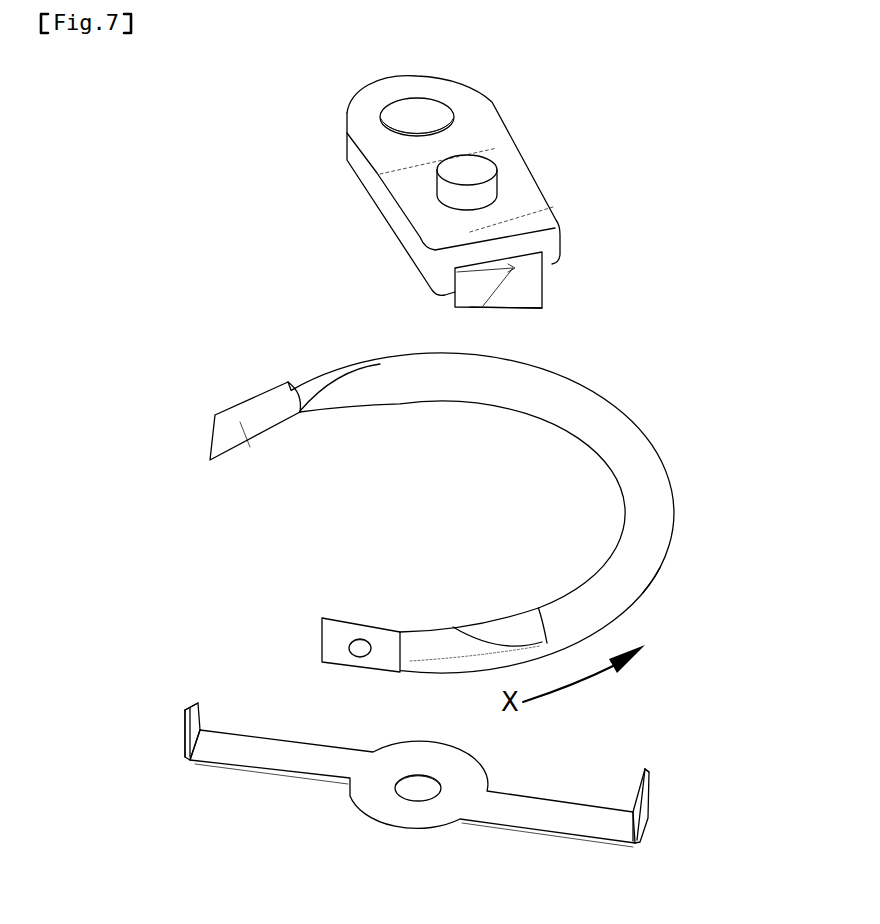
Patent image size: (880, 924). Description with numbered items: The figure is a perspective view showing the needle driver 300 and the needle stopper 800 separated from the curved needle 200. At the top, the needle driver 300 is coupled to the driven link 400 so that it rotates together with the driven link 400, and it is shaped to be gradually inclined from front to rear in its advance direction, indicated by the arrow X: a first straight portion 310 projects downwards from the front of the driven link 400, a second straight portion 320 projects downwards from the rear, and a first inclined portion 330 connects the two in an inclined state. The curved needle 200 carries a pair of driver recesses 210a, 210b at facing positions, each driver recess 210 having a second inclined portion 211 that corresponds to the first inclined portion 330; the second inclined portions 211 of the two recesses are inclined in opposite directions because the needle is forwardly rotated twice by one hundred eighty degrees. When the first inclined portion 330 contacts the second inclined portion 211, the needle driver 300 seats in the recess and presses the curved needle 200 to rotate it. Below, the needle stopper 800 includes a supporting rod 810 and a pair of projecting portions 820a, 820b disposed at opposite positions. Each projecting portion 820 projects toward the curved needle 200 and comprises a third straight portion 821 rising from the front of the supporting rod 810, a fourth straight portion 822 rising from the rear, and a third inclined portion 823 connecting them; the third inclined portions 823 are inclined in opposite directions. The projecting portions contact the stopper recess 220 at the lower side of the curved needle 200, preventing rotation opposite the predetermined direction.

The curved needle 200 is at (457, 504).
The driver recess 210 is at (320, 465).
The driver recess 210a is at (505, 589).
The driver recess 210b is at (334, 438).
The second inclined portion 211 is at (327, 378).
The stopper recess 220 is at (648, 591).
The needle driver 300 is at (509, 305).
The first straight portion 310 is at (545, 286).
The second straight portion 320 is at (455, 290).
The first inclined portion 330 is at (506, 308).
The driven link 400 is at (485, 115).
The needle stopper 800 is at (449, 787).
The supporting rod 810 is at (580, 829).
The projecting portion 820 is at (172, 752).
The projecting portion 820a is at (702, 798).
The projecting portion 820b is at (209, 721).
The third straight portion 821 is at (186, 729).
The fourth straight portion 822 is at (206, 717).
The third inclined portion 823 is at (195, 705).